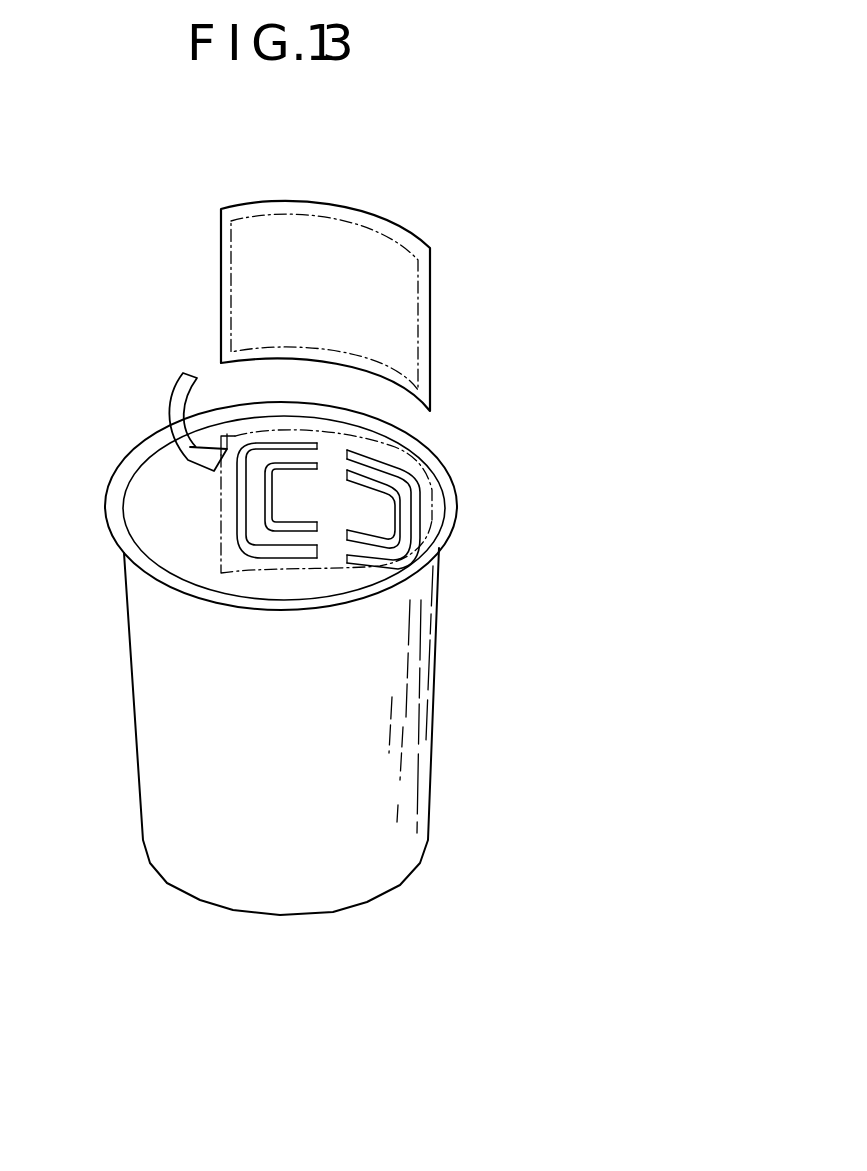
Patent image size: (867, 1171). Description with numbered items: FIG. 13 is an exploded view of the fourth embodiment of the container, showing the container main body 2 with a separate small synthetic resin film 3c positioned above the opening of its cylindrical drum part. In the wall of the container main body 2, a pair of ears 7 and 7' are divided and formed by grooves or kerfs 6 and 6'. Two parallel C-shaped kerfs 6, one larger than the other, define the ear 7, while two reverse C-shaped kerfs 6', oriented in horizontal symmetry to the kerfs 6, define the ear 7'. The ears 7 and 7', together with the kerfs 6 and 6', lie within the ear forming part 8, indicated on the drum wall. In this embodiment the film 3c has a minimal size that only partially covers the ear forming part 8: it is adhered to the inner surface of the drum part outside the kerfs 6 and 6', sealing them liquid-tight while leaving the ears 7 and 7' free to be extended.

The container main body 2 is at (439, 712).
The film 3c is at (412, 221).
The kerf 6 is at (441, 509).
The kerf 6' is at (173, 500).
The ear 7 is at (439, 497).
The ear 7' is at (243, 450).
The ear forming part 8 is at (400, 489).